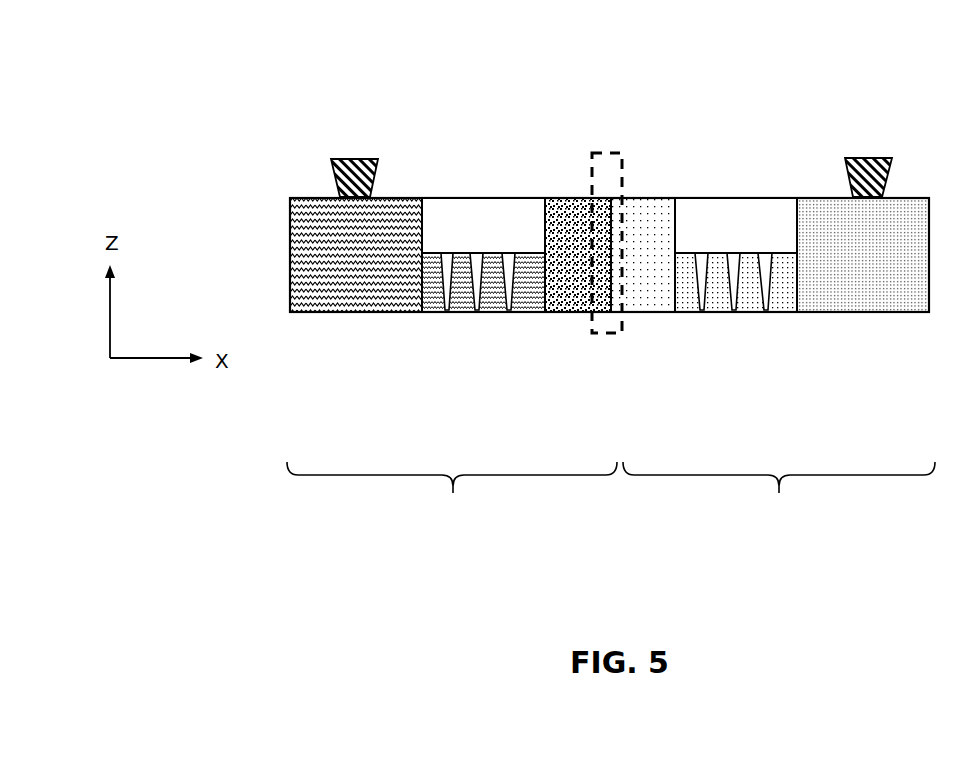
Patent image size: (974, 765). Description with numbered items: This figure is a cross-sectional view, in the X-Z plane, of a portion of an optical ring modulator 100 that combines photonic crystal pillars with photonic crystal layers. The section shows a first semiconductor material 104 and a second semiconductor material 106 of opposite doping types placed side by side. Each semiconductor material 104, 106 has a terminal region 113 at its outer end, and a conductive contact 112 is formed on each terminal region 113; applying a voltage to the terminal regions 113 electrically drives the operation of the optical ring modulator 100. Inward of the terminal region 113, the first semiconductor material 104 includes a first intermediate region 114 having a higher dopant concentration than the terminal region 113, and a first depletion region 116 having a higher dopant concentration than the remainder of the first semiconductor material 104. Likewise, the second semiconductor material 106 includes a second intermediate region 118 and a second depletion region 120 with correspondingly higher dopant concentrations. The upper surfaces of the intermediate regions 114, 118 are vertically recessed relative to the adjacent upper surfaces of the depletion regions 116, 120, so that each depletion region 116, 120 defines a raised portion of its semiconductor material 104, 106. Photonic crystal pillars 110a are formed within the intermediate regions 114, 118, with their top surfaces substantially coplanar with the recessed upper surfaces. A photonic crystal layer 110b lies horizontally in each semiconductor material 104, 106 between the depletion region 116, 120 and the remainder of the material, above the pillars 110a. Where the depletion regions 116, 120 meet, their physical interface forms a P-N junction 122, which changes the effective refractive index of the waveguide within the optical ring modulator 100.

The optical ring modulator 100 is at (336, 86).
The first semiconductor material 104 is at (452, 497).
The second semiconductor material 106 is at (779, 497).
The photonic crystal pillars 110a is at (510, 300).
The photonic crystal layer 110b is at (457, 222).
The conductive contact 112 is at (378, 165).
The terminal region 113 is at (327, 301).
The first intermediate region 114 is at (465, 303).
The first depletion region 116 is at (578, 300).
The second intermediate region 118 is at (777, 302).
The second depletion region 120 is at (645, 302).
The P-N junction 122 is at (600, 153).